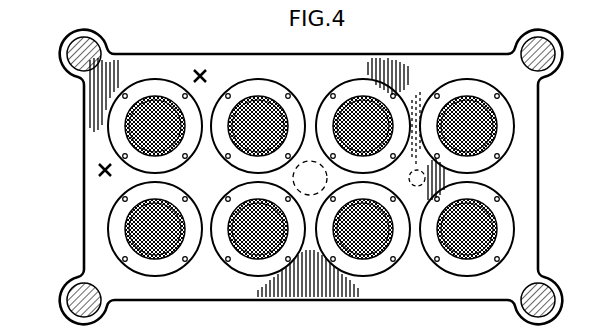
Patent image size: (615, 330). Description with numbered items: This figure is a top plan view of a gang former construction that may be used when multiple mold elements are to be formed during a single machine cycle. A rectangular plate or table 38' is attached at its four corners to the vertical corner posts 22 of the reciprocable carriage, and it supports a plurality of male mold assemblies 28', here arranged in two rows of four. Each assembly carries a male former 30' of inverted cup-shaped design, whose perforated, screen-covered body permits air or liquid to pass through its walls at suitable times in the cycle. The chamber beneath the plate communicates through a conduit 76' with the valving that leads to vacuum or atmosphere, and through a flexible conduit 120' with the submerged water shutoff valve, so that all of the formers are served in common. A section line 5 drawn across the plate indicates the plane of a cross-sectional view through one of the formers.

The vertical corner posts 22 is at (74, 58).
The male mold assembly 28' is at (345, 177).
The male former 30' is at (353, 176).
The plate or table 38' is at (309, 177).
The conduit 76' is at (310, 131).
The flexible conduit 120' is at (416, 228).
The section line 5- 5 is at (147, 117).